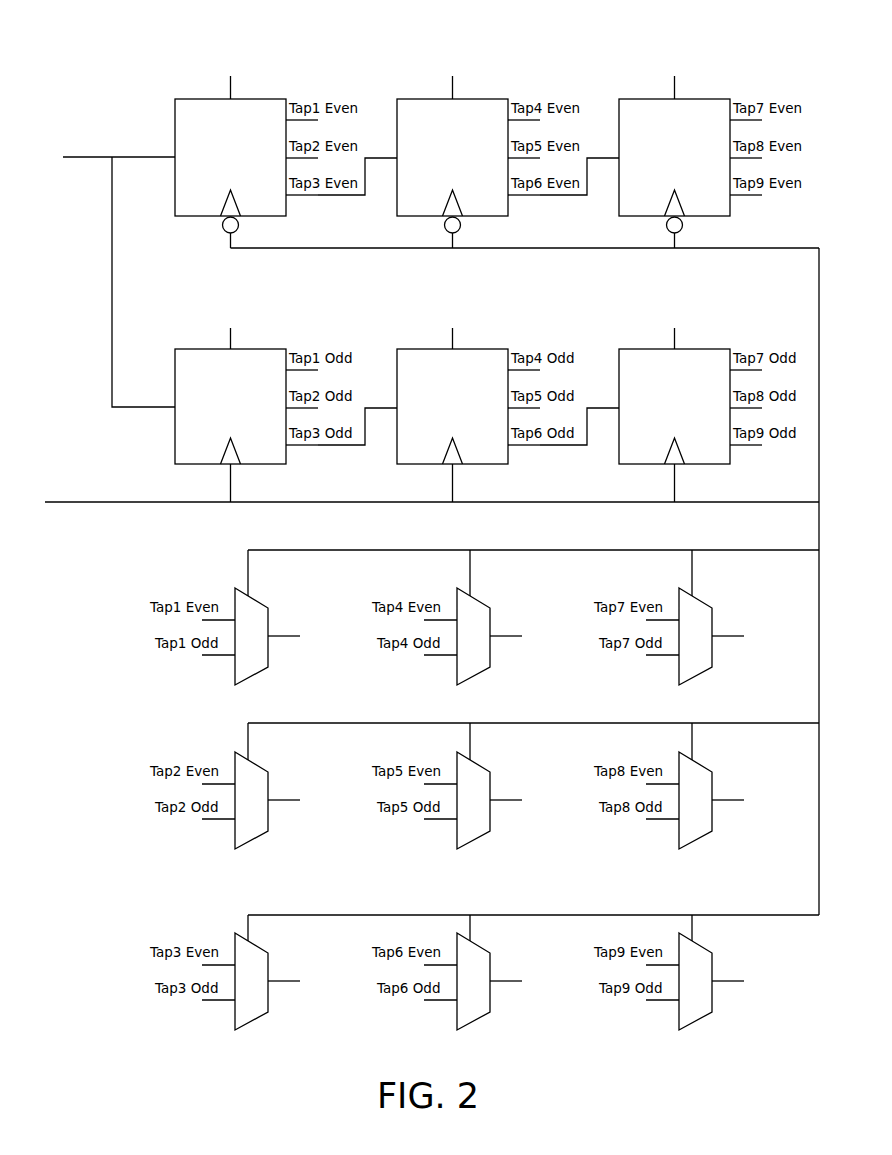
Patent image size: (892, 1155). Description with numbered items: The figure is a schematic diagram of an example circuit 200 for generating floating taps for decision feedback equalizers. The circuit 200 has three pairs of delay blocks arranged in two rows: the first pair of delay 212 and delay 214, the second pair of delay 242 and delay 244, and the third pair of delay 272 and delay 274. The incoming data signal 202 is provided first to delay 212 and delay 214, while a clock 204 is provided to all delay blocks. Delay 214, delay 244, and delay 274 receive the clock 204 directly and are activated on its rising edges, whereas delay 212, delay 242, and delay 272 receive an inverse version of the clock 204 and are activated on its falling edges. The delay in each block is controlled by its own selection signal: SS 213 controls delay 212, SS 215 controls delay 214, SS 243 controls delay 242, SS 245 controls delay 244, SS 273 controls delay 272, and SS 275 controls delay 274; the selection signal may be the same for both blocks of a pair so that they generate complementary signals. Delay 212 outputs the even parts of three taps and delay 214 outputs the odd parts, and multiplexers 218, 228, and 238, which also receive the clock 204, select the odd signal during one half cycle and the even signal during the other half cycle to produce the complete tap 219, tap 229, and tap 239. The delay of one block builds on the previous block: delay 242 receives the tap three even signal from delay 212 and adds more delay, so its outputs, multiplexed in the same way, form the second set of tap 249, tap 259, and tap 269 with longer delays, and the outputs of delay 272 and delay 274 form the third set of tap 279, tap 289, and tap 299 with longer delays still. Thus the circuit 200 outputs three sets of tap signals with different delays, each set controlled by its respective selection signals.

The circuit 200 is at (128, 28).
The data signal 202 is at (88, 146).
The clock 204 is at (83, 484).
The delay 212 is at (250, 179).
The delay 242 is at (472, 179).
The delay 272 is at (694, 179).
The delay 214 is at (250, 429).
The delay 244 is at (472, 429).
The delay 274 is at (694, 429).
The selection signal SS 213 is at (250, 73).
The selection signal SS 243 is at (472, 73).
The selection signal SS 273 is at (694, 73).
The selection signal SS 215 is at (250, 325).
The selection signal SS 245 is at (472, 325).
The selection signal SS 275 is at (694, 325).
The multiplexer 218 is at (220, 644).
The multiplexer 228 is at (220, 808).
The multiplexer 238 is at (220, 989).
The tap 219 is at (345, 660).
The tap 249 is at (567, 660).
The tap 279 is at (789, 660).
The tap 229 is at (345, 824).
The tap 259 is at (567, 824).
The tap 289 is at (789, 824).
The tap 239 is at (345, 1005).
The tap 269 is at (567, 1005).
The tap 299 is at (789, 1005).